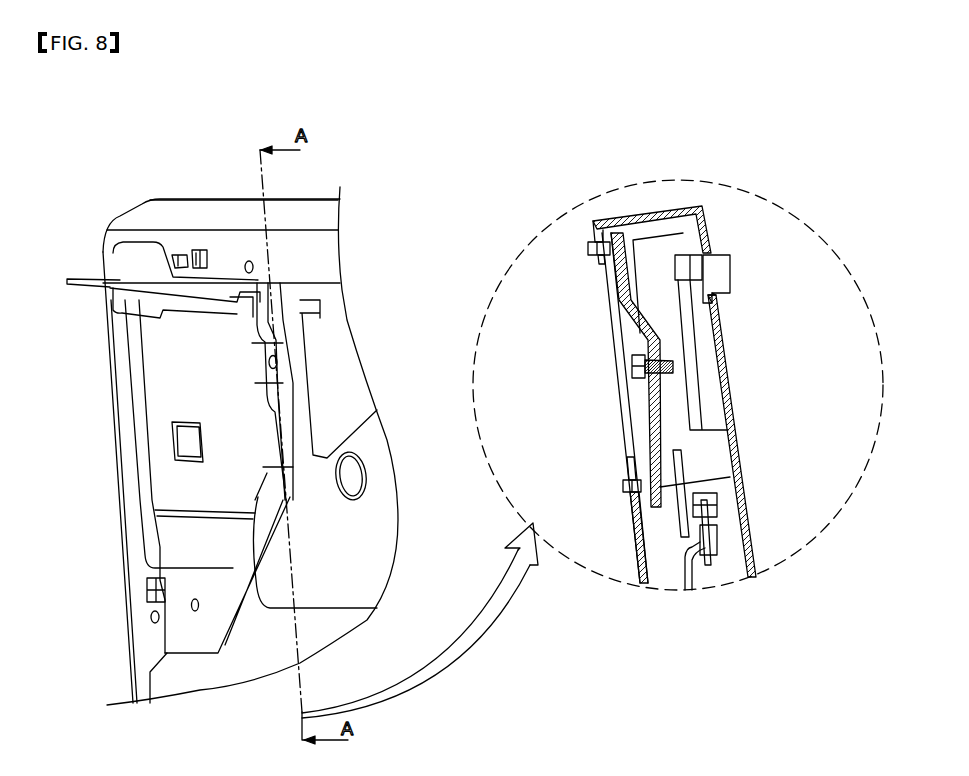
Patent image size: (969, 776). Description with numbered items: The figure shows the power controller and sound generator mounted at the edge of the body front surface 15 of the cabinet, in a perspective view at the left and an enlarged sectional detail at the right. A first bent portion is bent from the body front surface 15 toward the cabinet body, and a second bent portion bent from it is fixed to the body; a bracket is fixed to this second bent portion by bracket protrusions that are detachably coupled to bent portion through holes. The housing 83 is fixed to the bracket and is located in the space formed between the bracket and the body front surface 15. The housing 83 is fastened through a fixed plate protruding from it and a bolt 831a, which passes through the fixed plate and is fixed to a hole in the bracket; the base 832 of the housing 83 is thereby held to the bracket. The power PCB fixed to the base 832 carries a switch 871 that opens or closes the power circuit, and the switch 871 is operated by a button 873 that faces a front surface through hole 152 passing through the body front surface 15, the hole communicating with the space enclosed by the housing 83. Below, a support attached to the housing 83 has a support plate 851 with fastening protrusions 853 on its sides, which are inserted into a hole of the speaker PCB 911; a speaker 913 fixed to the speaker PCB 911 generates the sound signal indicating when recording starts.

The body front surface 15 is at (730, 353).
The housing 83 is at (715, 455).
The front surface through hole 152 is at (723, 297).
The bolt 831a is at (633, 370).
The base 832 is at (172, 390).
The support plate 851 is at (680, 520).
The fastening protrusion 853 is at (713, 510).
The switch 871 is at (693, 277).
The button 873 is at (723, 277).
The speaker PCB 911 is at (713, 567).
The speaker 913 is at (717, 542).